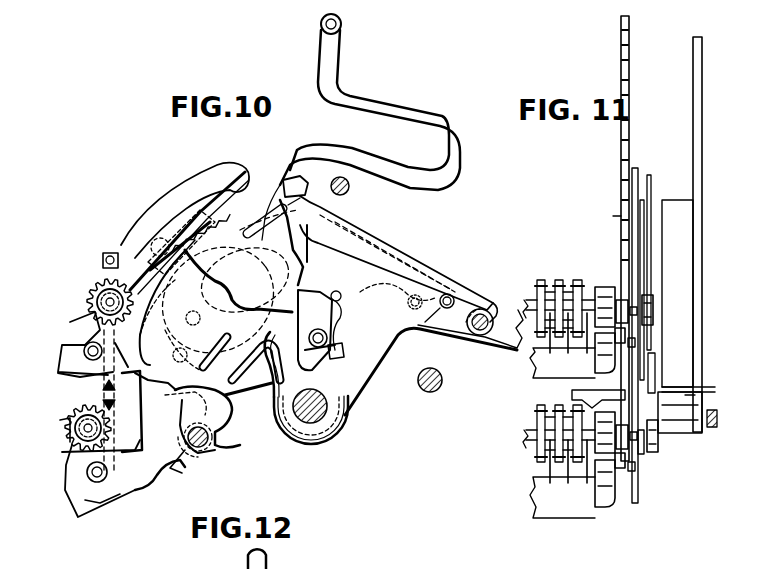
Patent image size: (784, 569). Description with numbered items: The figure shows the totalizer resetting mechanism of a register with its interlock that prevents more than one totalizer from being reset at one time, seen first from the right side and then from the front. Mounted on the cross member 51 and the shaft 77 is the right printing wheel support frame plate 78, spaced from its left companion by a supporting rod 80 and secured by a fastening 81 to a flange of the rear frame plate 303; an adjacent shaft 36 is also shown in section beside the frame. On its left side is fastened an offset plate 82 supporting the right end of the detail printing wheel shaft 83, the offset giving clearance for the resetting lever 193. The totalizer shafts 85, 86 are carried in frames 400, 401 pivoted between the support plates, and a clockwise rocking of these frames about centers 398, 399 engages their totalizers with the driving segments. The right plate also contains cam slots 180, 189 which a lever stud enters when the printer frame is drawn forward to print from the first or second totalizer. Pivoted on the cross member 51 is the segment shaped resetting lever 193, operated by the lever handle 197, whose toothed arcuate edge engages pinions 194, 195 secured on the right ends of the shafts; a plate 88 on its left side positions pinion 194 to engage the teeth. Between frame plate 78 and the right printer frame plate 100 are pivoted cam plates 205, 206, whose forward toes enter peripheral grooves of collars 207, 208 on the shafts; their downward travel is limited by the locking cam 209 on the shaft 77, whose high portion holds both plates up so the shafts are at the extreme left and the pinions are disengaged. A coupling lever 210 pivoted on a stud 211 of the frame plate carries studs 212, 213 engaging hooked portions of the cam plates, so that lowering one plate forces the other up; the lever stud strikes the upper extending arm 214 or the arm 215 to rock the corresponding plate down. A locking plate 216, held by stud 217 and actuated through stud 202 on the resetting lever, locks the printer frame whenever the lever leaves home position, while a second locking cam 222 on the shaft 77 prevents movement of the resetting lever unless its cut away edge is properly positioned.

In FIG. 10, the pin 36 is at (442, 370).
In FIG. 10, the cross member 51 is at (309, 393).
In FIG. 11, the cross member 51 is at (708, 382).
In FIG. 10, the shaft 77 is at (193, 465).
In FIG. 10, the right printing wheel support frame plate 78 is at (162, 482).
In FIG. 11, the right printing wheel support frame plate 78 is at (638, 176).
In FIG. 10, the supporting rod 80 is at (124, 396).
In FIG. 10, the fastening 81 is at (493, 312).
In FIG. 10, the offset plate 82 is at (103, 258).
In FIG. 10, the detail printing wheel shaft 83 is at (181, 242).
In FIG. 10, the totalizer shaft 85 is at (97, 305).
In FIG. 11, the totalizer shaft 85 is at (646, 332).
In FIG. 10, the totalizer shaft 86 is at (74, 430).
In FIG. 11, the totalizer shaft 86 is at (642, 447).
In FIG. 11, the plate 88 is at (618, 214).
In FIG. 11, the right printer frame plate 100 is at (694, 224).
In FIG. 10, the cam slot 180 is at (290, 186).
In FIG. 10, the cam slot 189 is at (248, 166).
In FIG. 10, the resetting lever 193 is at (330, 178).
In FIG. 11, the resetting lever 193 is at (630, 103).
In FIG. 10, the pinion 194 is at (98, 292).
In FIG. 11, the pinion 194 is at (616, 284).
In FIG. 10, the pinion 195 is at (76, 414).
In FIG. 11, the pinion 195 is at (616, 420).
In FIG. 10, the lever handle 197 is at (330, 60).
In FIG. 10, the stud 202 is at (397, 289).
In FIG. 10, the cam plate 205 is at (275, 325).
In FIG. 11, the cam plate 205 is at (648, 210).
In FIG. 10, the cam plate 206 is at (216, 307).
In FIG. 11, the collar 207 is at (655, 304).
In FIG. 11, the collar 208 is at (660, 441).
In FIG. 10, the locking cam 209 is at (178, 415).
In FIG. 10, the coupling lever 210 is at (330, 330).
In FIG. 10, the stud 211 is at (338, 344).
In FIG. 10, the stud 212 is at (330, 296).
In FIG. 10, the stud 213 is at (344, 355).
In FIG. 10, the upper extending arm 214 is at (318, 248).
In FIG. 10, the arm 215 is at (208, 252).
In FIG. 10, the locking plate 216 is at (390, 195).
In FIG. 10, the stud 217 is at (456, 315).
In FIG. 10, the locking cam 222 is at (230, 436).
In FIG. 10, the rear frame plate 303 is at (485, 337).
In FIG. 10, the center 398 is at (82, 351).
In FIG. 10, the center 399 is at (110, 482).
In FIG. 10, the frame 400 is at (80, 336).
In FIG. 10, the frame 401 is at (68, 472).